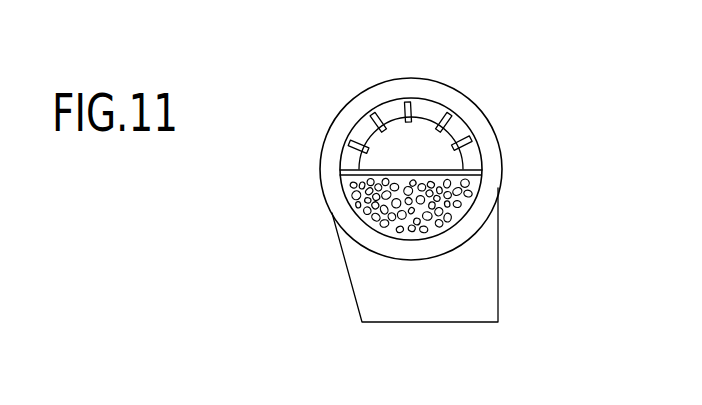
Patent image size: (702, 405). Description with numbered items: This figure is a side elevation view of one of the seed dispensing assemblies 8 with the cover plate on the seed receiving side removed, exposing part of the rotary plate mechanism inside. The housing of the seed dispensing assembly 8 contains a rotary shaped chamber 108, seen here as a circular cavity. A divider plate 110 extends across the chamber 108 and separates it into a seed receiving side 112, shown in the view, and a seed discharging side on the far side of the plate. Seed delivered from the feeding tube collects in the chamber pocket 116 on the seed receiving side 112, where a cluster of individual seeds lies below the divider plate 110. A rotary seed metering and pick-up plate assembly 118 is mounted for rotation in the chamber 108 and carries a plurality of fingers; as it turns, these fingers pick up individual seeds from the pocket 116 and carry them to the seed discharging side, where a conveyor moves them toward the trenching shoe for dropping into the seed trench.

The seed dispensing assembly 8 is at (500, 162).
The rotary shaped chamber 108 is at (368, 128).
The divider plate 110 is at (356, 170).
The seed receiving side 112 is at (437, 146).
The chamber pocket 116 is at (355, 203).
The rotary seed metering and pick-up plate assembly 118 is at (428, 104).